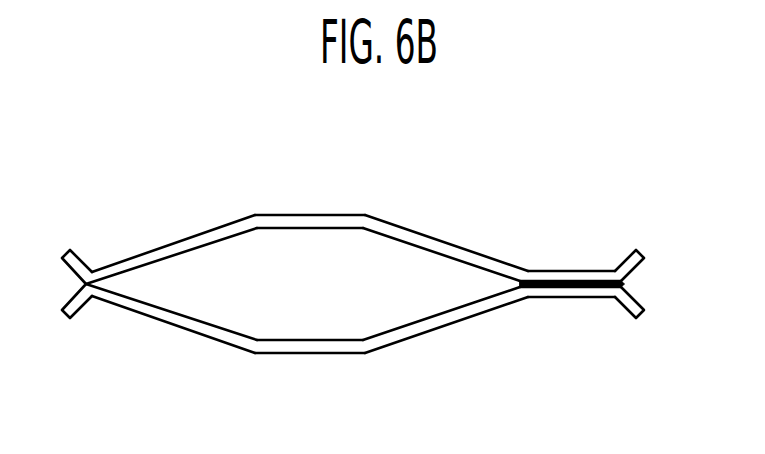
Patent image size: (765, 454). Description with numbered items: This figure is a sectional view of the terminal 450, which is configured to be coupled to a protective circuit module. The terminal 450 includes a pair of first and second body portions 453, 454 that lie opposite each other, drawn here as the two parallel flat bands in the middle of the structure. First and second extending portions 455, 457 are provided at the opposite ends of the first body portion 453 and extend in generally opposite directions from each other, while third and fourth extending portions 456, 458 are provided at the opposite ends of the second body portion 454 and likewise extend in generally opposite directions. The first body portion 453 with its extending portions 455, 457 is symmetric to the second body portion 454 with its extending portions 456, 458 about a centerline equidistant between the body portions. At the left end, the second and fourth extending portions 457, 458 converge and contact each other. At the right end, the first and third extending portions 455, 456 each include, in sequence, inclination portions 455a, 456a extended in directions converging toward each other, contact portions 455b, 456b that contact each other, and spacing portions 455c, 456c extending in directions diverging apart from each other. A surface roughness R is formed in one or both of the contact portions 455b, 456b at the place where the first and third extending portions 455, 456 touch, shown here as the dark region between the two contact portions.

The terminal 450 is at (614, 152).
The first body portion 453 is at (337, 354).
The second body portion 454 is at (338, 215).
The first extending portion 455 is at (602, 397).
The inclination portion 455a is at (433, 332).
The contact portion 455b is at (528, 297).
The spacing portion 455c is at (628, 316).
The third extending portion 456 is at (600, 175).
The inclination portion 456a is at (433, 236).
The contact portion 456b is at (528, 271).
The spacing portion 456c is at (628, 253).
The second extending portion 457 is at (190, 331).
The fourth extending portion 458 is at (190, 238).
The surface roughness R is at (619, 281).